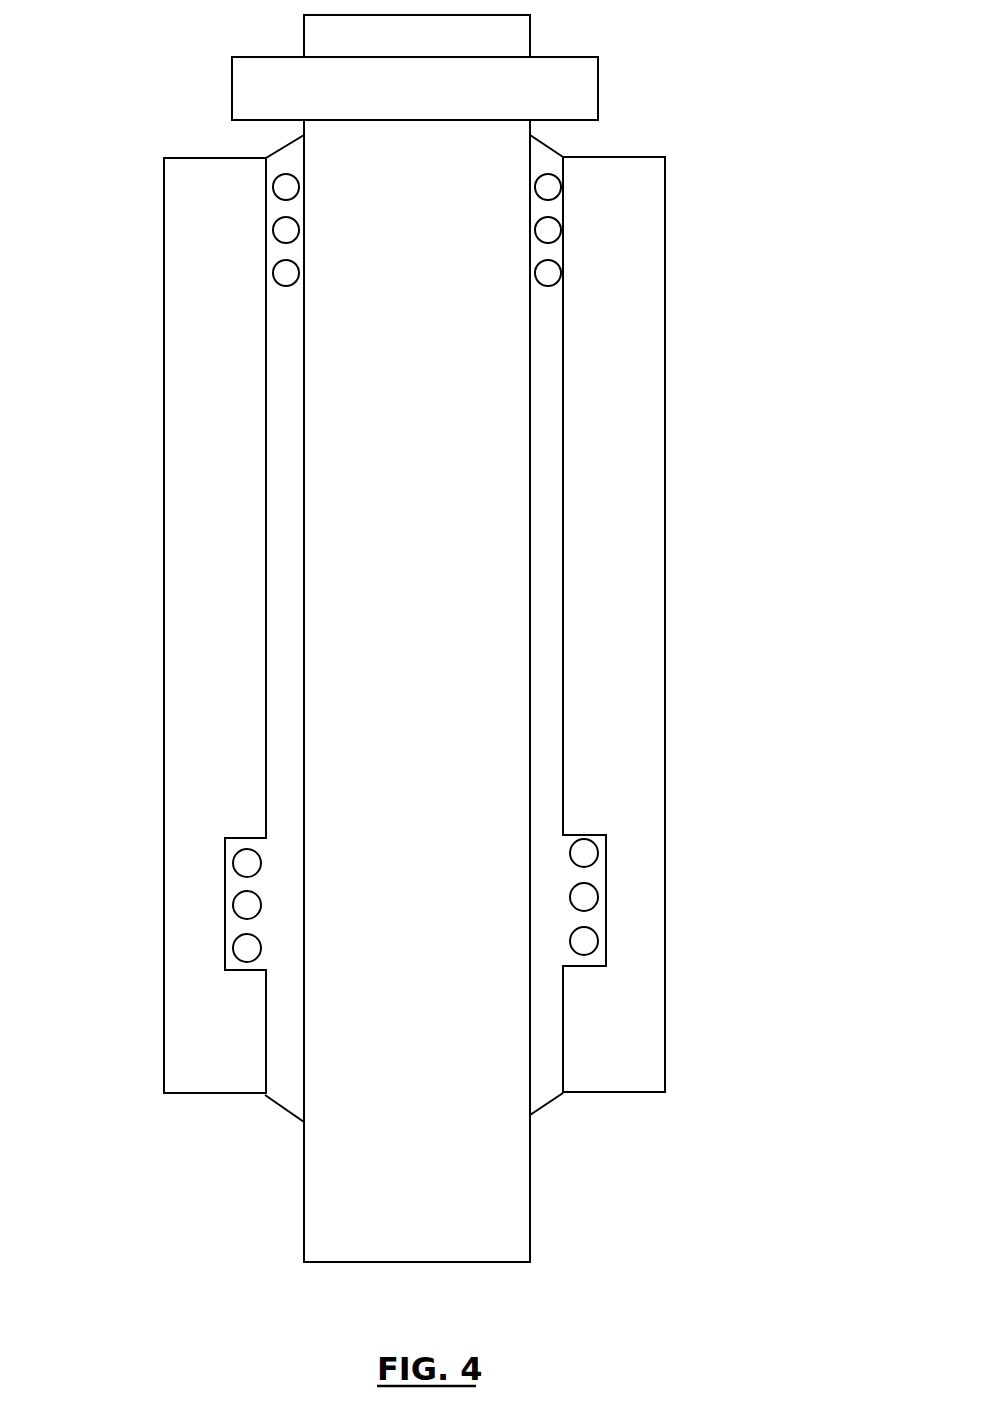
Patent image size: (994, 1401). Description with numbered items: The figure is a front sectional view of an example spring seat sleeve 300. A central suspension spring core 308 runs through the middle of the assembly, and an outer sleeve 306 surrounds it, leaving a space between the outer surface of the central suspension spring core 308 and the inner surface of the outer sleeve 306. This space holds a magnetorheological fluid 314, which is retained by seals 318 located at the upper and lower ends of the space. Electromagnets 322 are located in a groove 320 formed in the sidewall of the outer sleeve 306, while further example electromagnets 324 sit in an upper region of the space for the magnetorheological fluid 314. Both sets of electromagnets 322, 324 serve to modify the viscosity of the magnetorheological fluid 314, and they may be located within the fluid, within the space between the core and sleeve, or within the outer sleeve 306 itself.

The spring seat sleeve 300 is at (722, 52).
The outer sleeve 306 is at (163, 477).
The central suspension spring core 308 is at (304, 1215).
The magnetorheological fluid 314 is at (278, 610).
The seals 318 is at (278, 146).
The groove 320 is at (607, 833).
The electromagnets 322 is at (248, 863).
The electromagnets 324 is at (552, 228).